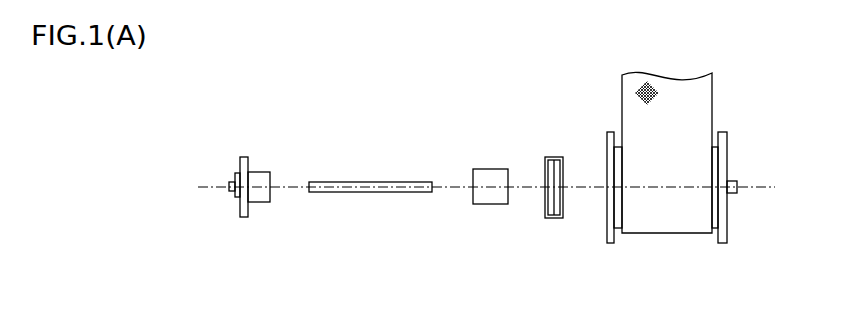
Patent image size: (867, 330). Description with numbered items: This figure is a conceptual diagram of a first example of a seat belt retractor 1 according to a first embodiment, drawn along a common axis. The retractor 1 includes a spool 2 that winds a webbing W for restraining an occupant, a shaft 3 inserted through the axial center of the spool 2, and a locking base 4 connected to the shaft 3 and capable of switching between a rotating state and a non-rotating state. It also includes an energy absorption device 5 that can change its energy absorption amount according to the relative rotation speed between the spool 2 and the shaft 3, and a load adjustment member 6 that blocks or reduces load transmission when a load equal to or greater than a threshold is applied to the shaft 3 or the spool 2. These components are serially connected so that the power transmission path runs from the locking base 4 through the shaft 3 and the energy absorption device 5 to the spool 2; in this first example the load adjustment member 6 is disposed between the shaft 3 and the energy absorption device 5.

The seat belt retractor 1 is at (241, 85).
The spool 2 is at (727, 153).
The shaft 3 is at (372, 193).
The locking base 4 is at (244, 218).
The energy absorption device 5 is at (553, 219).
The load adjustment member 6 is at (492, 205).
The webbing W is at (712, 92).